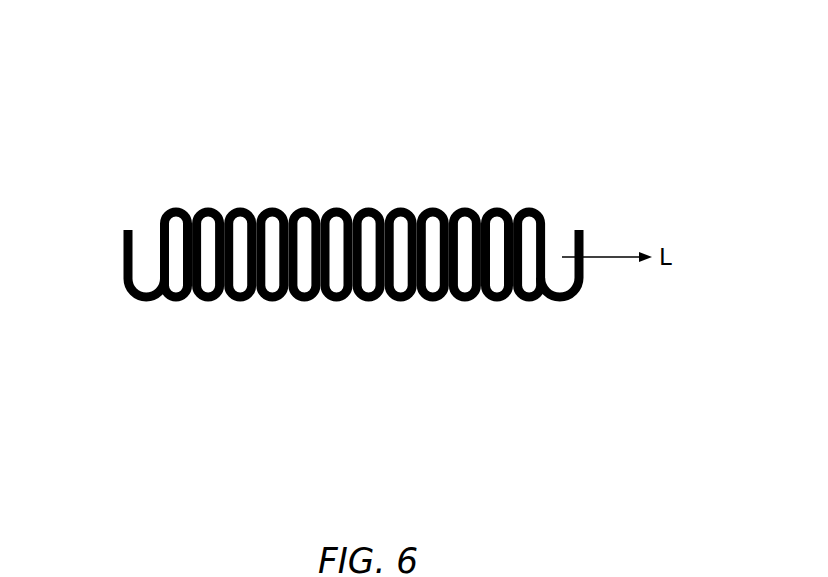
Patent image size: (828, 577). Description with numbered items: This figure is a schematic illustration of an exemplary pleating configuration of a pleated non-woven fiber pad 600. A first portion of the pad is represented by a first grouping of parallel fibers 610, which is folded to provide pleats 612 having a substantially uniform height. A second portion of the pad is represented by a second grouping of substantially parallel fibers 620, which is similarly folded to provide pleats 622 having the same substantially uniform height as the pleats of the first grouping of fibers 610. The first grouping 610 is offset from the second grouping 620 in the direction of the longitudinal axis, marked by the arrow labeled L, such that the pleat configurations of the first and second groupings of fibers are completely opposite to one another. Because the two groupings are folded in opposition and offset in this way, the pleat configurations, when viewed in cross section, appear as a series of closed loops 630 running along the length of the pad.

The pleated non-woven fiber pad 600 is at (333, 242).
The first grouping of parallel fibers 610 is at (140, 300).
The pleats 612 is at (179, 208).
The second grouping of substantially parallel fibers 620 is at (565, 302).
The pleats 622 is at (220, 208).
The closed loops 630 is at (208, 280).